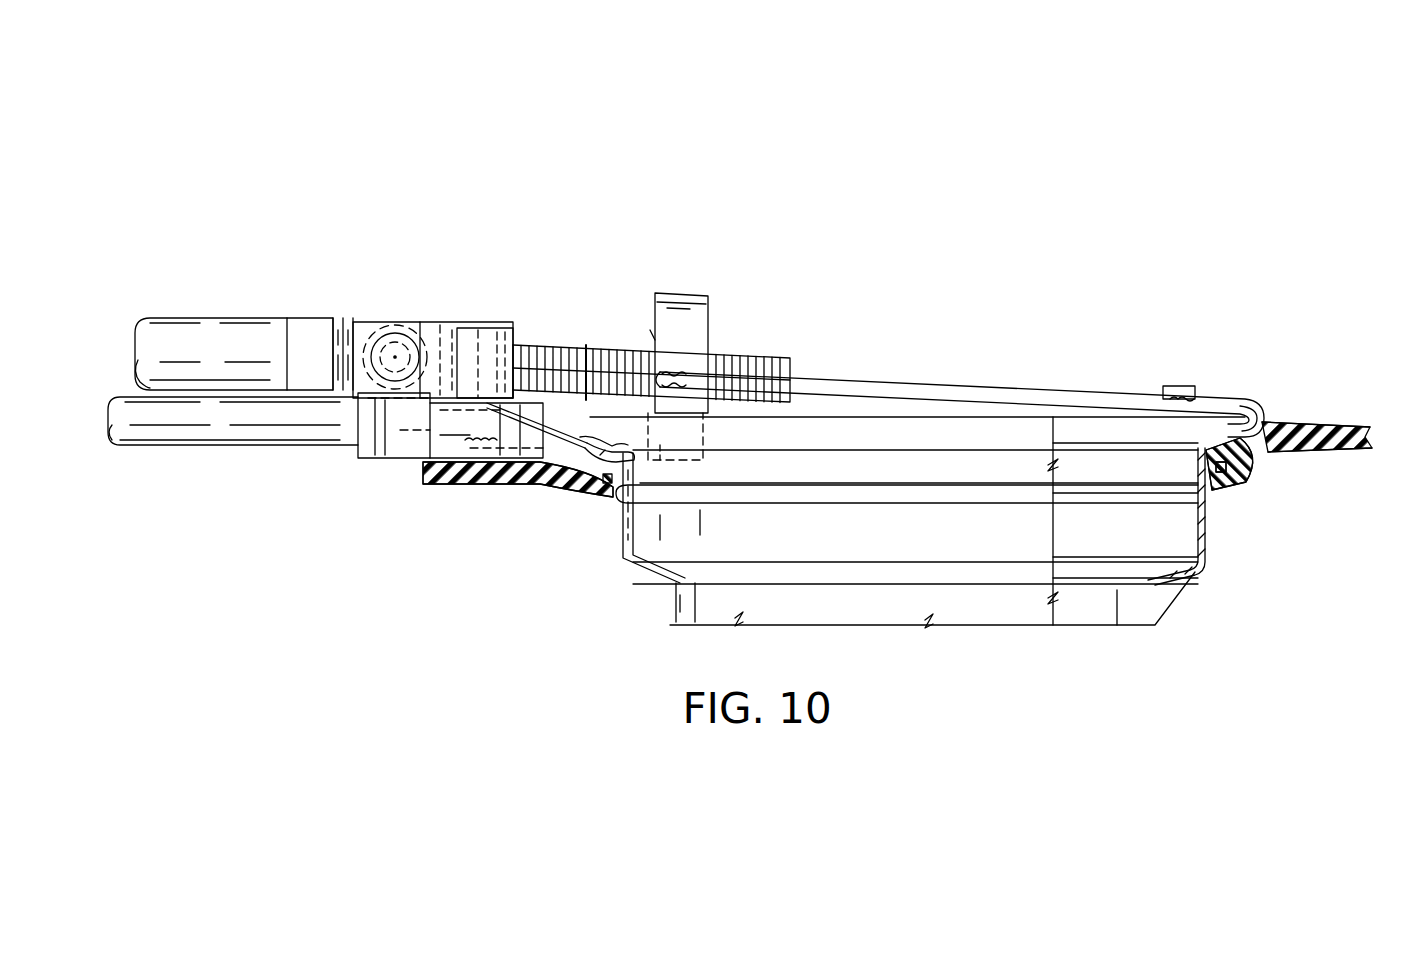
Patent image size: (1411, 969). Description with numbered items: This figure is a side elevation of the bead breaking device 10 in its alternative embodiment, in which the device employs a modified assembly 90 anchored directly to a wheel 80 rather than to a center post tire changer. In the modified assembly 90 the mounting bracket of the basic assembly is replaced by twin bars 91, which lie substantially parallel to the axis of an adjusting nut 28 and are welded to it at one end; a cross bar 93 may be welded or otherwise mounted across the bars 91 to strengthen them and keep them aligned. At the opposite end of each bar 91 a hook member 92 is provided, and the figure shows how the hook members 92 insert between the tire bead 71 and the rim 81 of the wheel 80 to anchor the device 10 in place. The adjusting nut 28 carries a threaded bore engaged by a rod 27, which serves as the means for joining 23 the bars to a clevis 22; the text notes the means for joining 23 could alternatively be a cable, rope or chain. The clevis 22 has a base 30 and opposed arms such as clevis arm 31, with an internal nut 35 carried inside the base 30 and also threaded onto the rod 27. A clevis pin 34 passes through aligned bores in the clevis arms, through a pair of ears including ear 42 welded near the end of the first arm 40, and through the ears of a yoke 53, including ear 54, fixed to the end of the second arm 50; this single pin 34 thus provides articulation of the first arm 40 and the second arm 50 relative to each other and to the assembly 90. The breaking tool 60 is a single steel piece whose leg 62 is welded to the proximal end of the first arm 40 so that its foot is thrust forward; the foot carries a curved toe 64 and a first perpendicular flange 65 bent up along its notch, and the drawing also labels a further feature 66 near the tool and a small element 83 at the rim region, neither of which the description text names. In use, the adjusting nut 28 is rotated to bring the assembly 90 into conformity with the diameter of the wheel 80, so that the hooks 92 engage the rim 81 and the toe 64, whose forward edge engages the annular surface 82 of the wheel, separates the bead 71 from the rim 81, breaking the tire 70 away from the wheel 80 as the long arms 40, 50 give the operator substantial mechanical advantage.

The bead breaking device 10 is at (248, 140).
The clevis 22 is at (509, 325).
The means for joining 23 is at (647, 330).
The rod 27 is at (613, 350).
The adjusting nut 28 is at (690, 300).
The base 30 is at (520, 330).
The clevis arm 31 is at (436, 325).
The clevis pin 34 is at (382, 330).
The internal nut 35 is at (478, 330).
The first arm 40 is at (165, 448).
The ear 42 is at (375, 440).
The second arm 50 is at (186, 320).
The yoke 53 is at (408, 320).
The ear 54 is at (312, 333).
The breaking tool 60 is at (515, 464).
The leg 62 is at (455, 455).
The toe 64 is at (603, 455).
The first perpendicular flange 65 is at (586, 345).
The wire 66 is at (553, 440).
The tire 70 is at (1352, 425).
The tire bead 71 is at (1237, 482).
The wheel 80 is at (648, 580).
The rim 81 is at (1250, 428).
The annular surface 82 is at (728, 490).
The fastener 83 is at (1205, 466).
The modified assembly 90 is at (765, 323).
The bar 91 is at (963, 390).
The hook member 92 is at (1255, 447).
The cross bar 93 is at (1183, 385).